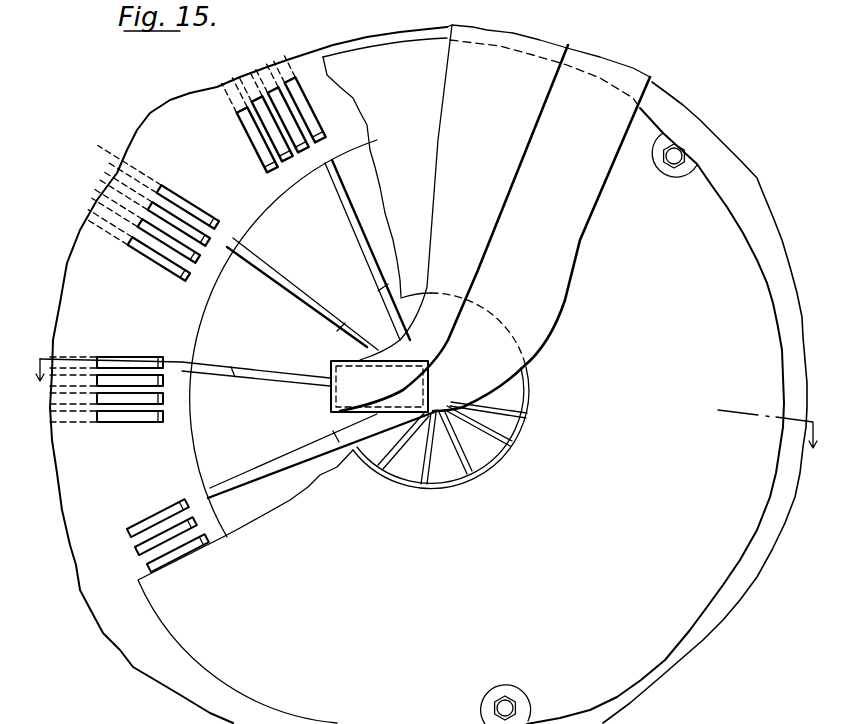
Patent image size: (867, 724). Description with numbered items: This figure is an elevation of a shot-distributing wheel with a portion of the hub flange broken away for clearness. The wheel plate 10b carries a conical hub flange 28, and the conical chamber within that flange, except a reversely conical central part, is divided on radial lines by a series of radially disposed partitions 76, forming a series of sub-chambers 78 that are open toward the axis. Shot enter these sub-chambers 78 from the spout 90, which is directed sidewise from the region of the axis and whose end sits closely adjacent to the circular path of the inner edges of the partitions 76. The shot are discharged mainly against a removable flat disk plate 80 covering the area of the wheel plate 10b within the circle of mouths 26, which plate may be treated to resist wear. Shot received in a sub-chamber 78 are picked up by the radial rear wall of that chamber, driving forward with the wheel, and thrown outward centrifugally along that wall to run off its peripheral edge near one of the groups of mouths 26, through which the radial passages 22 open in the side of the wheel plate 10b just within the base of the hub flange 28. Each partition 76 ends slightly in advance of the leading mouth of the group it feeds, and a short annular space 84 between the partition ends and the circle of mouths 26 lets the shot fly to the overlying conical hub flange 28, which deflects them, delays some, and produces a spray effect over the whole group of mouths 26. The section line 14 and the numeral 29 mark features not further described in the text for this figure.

The wheel plate 10b is at (136, 652).
The section line 14- 14 is at (426, 415).
The radial passages 22 is at (95, 180).
The mouths 26 is at (192, 217).
The conical hub flange 28 is at (472, 382).
The hub ring 29 is at (499, 455).
The radially disposed partitions 76 is at (255, 262).
The sub-chambers 78 is at (391, 366).
The removable flat disk plate 80 is at (201, 329).
The annular space 84 is at (174, 418).
The spout 90 is at (486, 218).